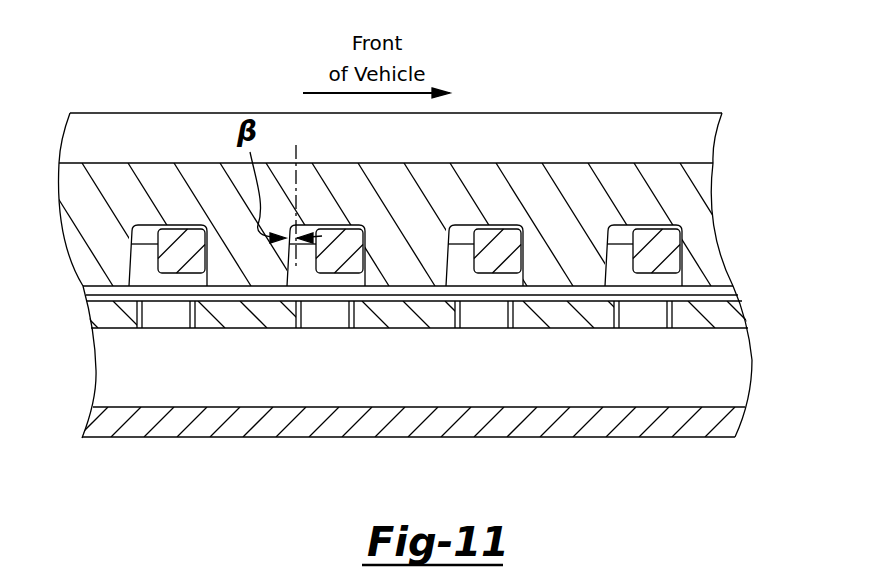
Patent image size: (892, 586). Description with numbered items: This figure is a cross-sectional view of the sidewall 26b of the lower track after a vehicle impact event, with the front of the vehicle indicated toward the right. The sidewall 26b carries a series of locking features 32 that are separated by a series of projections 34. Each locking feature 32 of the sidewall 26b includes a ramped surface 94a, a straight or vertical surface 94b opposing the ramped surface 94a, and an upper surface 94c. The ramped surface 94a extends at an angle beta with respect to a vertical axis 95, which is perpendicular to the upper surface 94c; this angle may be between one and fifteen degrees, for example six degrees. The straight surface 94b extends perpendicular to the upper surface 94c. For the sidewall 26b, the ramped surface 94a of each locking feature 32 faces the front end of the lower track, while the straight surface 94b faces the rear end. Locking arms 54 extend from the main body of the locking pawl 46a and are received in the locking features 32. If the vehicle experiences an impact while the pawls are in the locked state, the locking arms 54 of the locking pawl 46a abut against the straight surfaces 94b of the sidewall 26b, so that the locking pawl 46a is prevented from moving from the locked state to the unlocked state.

The sidewall 26b is at (688, 182).
The locking feature 32 is at (462, 285).
The projection 34 is at (400, 262).
The ramped surface 94a is at (450, 237).
The straight surface 94b is at (525, 248).
The upper surface 94c is at (510, 225).
The locking arm 54 is at (177, 237).
The vertical axis 95 is at (297, 160).
The locking pawl 46a is at (172, 288).